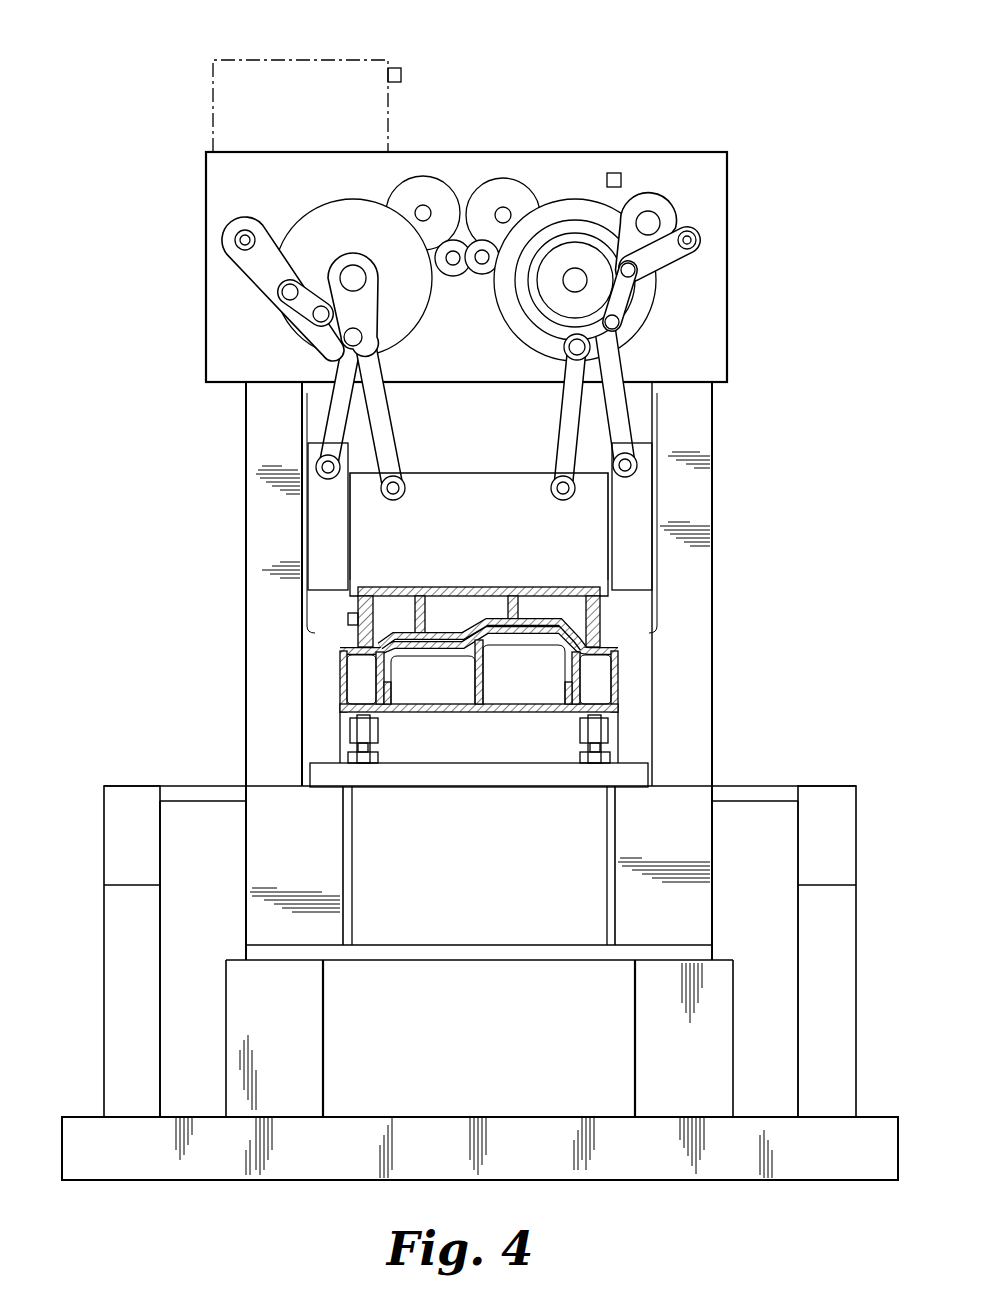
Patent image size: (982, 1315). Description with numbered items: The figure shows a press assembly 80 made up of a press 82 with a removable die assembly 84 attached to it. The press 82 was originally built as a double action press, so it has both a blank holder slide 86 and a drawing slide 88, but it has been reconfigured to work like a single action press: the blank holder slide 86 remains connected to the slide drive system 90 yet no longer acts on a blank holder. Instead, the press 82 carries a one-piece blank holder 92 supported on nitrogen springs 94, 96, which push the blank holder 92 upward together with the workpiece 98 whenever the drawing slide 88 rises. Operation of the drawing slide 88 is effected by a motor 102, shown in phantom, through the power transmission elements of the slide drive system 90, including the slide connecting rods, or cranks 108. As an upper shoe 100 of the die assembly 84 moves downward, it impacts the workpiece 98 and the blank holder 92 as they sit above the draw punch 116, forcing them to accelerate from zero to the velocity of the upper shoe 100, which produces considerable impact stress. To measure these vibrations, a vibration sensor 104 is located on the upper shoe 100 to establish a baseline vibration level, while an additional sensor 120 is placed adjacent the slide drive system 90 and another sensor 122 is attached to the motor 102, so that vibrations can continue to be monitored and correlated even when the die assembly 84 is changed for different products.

The press assembly 80 is at (480, 593).
The press 82 is at (480, 666).
The die assembly 84 is at (486, 668).
The blank holder slide 86 is at (277, 390).
The drawing slide 88 is at (480, 502).
The slide drive system 90 is at (544, 246).
The blank holder 92 is at (580, 671).
The nitrogen spring 94 is at (565, 748).
The nitrogen spring 96 is at (379, 736).
The workpiece 98 is at (600, 623).
The upper shoe 100 is at (595, 598).
The motor 102 is at (300, 79).
The vibration sensor 104 is at (249, 594).
The crank 108 is at (557, 407).
The draw punch 116 is at (478, 701).
The sensor 120 is at (652, 142).
The sensor 122 is at (445, 66).